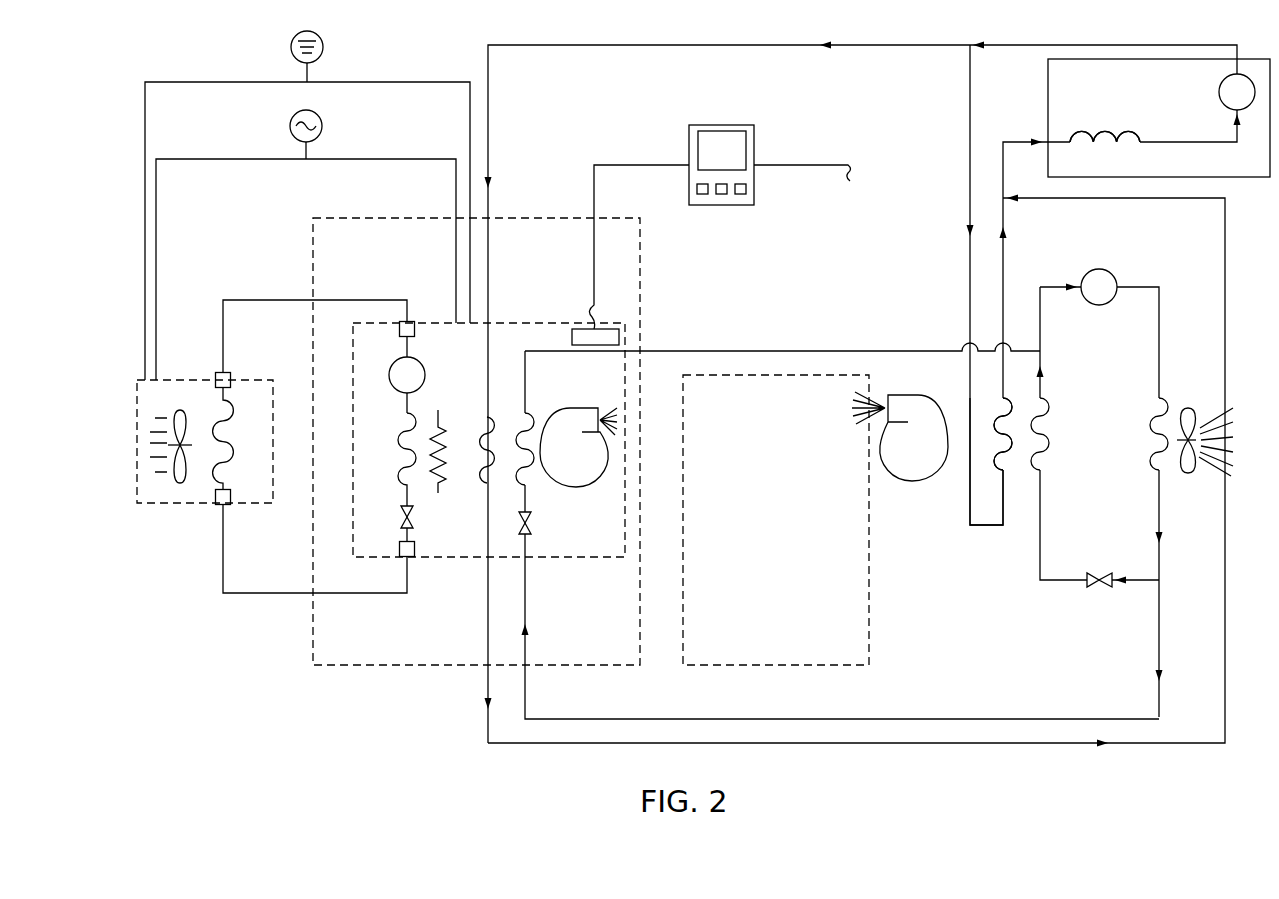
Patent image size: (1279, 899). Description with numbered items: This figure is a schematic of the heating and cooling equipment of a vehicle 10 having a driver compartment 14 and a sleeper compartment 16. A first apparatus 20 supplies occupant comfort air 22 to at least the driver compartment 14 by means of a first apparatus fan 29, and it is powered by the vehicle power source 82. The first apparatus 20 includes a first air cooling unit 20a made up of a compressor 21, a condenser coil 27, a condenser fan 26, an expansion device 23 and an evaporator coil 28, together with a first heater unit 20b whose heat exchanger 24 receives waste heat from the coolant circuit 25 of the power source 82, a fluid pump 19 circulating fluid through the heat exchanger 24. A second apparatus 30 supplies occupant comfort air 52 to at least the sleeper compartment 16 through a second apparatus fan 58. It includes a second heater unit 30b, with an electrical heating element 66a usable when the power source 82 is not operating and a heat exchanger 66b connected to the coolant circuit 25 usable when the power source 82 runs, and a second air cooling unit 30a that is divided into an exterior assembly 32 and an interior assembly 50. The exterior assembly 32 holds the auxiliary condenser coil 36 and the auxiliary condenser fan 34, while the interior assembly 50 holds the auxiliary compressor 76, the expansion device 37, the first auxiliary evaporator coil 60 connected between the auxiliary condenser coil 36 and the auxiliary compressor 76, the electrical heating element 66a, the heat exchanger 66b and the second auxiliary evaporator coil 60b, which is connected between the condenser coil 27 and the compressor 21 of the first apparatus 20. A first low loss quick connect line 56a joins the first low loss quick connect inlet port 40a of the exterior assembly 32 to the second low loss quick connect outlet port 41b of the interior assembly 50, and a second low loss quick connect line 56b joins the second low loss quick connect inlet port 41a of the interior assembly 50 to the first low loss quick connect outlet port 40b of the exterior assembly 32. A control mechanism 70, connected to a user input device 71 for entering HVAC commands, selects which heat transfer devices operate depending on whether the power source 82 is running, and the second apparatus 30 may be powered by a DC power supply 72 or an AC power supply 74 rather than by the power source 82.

The vehicle 10 is at (270, 748).
The driver compartment 14 is at (735, 663).
The sleeper compartment 16 is at (568, 663).
The fluid pump 19 is at (1218, 95).
The first apparatus 20 is at (977, 622).
The first air cooling unit 20a is at (1027, 587).
The first heater unit 20b is at (980, 537).
The compressor 21 is at (1101, 269).
The occupant comfort air 22 is at (867, 423).
The expansion device 23 is at (1097, 587).
The heat exchanger 24 is at (1006, 470).
The coolant circuit 25 is at (1090, 140).
The condenser fan 26 is at (1190, 408).
The condenser coil 27 is at (1152, 450).
The evaporator coil 28 is at (1047, 420).
The first apparatus fan 29 is at (915, 475).
The second apparatus 30 is at (248, 675).
The second air cooling unit 30a is at (378, 643).
The second heater unit 30b is at (467, 528).
The exterior assembly 32 is at (128, 482).
The auxiliary condenser fan 34 is at (181, 483).
The auxiliary condenser coil 36 is at (233, 447).
The expansion device 37 is at (413, 520).
The first low loss quick connect inlet port 40a is at (216, 381).
The first low loss quick connect outlet port 40b is at (228, 505).
The second low loss quick connect inlet port 41a is at (412, 557).
The second low loss quick connect outlet port 41b is at (412, 322).
The interior assembly 50 is at (605, 562).
The occupant comfort air 52 is at (606, 407).
The first low loss quick connect line 56a is at (258, 300).
The second low loss quick connect line 56b is at (297, 593).
The second apparatus fan 58 is at (580, 487).
The first auxiliary evaporator coil 60 is at (402, 458).
The second auxiliary evaporator coil 60b is at (528, 413).
The electrical heating element 66a is at (438, 410).
The heat exchanger 66b is at (487, 483).
The control mechanism 70 is at (627, 255).
The user input device 71 is at (783, 137).
The DC power supply 72 is at (324, 47).
The AC power supply 74 is at (323, 126).
The auxiliary compressor 76 is at (423, 368).
The power source 82 is at (1262, 177).